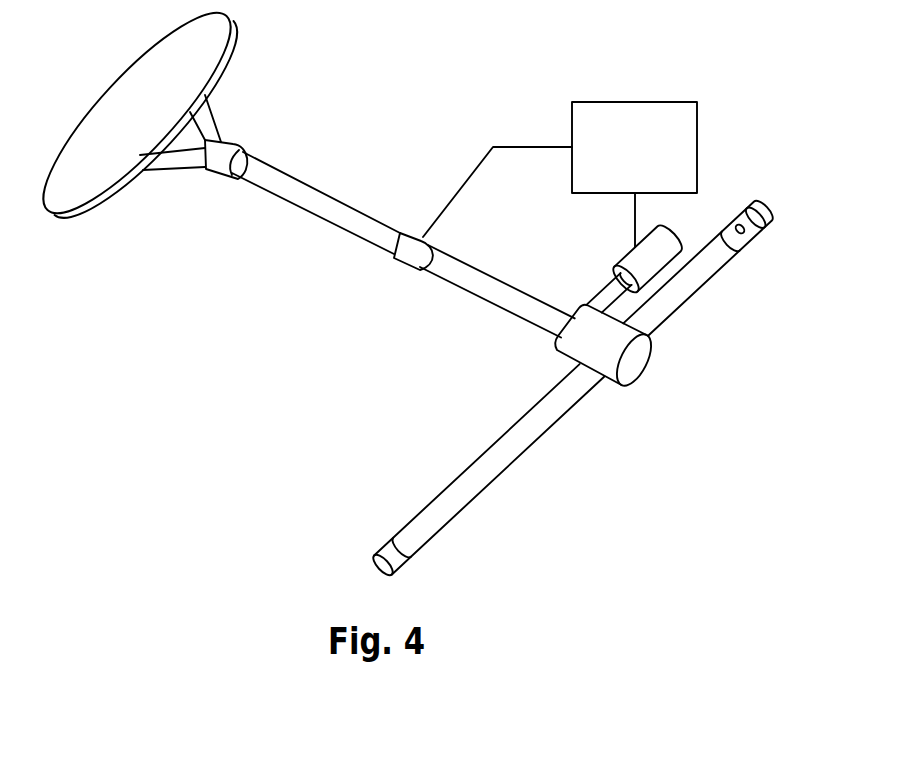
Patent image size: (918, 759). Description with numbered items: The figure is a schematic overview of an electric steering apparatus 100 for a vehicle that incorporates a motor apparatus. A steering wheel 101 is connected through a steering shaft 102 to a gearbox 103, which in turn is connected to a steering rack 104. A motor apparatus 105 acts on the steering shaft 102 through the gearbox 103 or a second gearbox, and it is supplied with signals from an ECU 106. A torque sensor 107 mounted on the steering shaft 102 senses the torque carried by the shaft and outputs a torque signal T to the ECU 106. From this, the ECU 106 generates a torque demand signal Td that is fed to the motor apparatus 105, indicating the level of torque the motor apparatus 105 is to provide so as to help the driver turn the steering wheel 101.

The steering apparatus 100 is at (316, 276).
The steering wheel 101 is at (82, 214).
The steering shaft 102 is at (283, 181).
The gearbox 103 is at (633, 368).
The steering rack 104 is at (493, 458).
The motor apparatus 105 is at (672, 237).
The ECU 106 is at (619, 113).
The torque sensor 107 is at (403, 232).